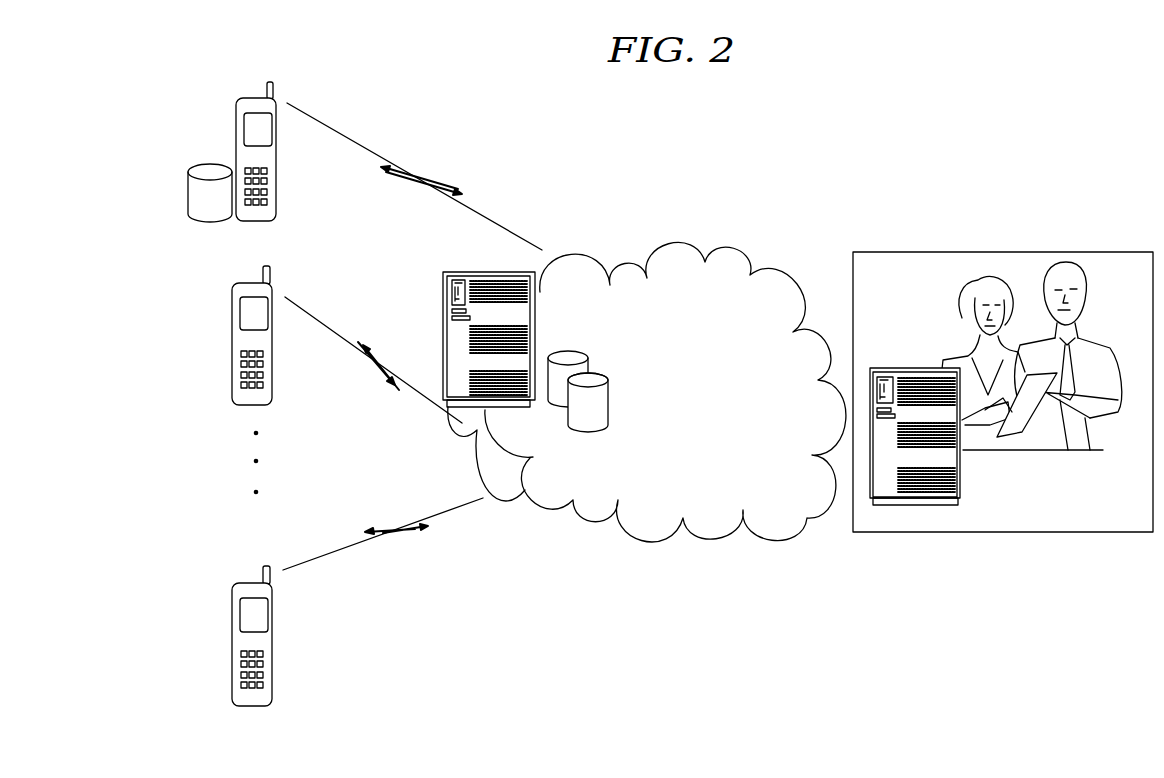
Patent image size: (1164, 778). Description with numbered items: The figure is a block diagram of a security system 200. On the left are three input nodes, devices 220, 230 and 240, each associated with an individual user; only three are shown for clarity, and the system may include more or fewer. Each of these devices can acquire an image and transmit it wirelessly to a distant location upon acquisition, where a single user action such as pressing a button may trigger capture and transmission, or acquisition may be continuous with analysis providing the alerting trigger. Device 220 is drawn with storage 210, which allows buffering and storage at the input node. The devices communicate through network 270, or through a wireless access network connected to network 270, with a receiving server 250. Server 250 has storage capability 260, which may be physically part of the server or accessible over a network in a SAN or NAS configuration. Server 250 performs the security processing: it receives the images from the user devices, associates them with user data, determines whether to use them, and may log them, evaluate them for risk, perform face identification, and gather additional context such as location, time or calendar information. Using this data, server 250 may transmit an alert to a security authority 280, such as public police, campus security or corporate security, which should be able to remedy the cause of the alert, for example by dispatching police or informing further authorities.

The security system 200 is at (950, 138).
The storage 210 is at (187, 193).
The device 220 is at (236, 119).
The device 230 is at (232, 313).
The device 240 is at (232, 605).
The server 250 is at (443, 300).
The storage capability 260 is at (598, 372).
The network 270 is at (730, 263).
The security authority 280 is at (977, 252).